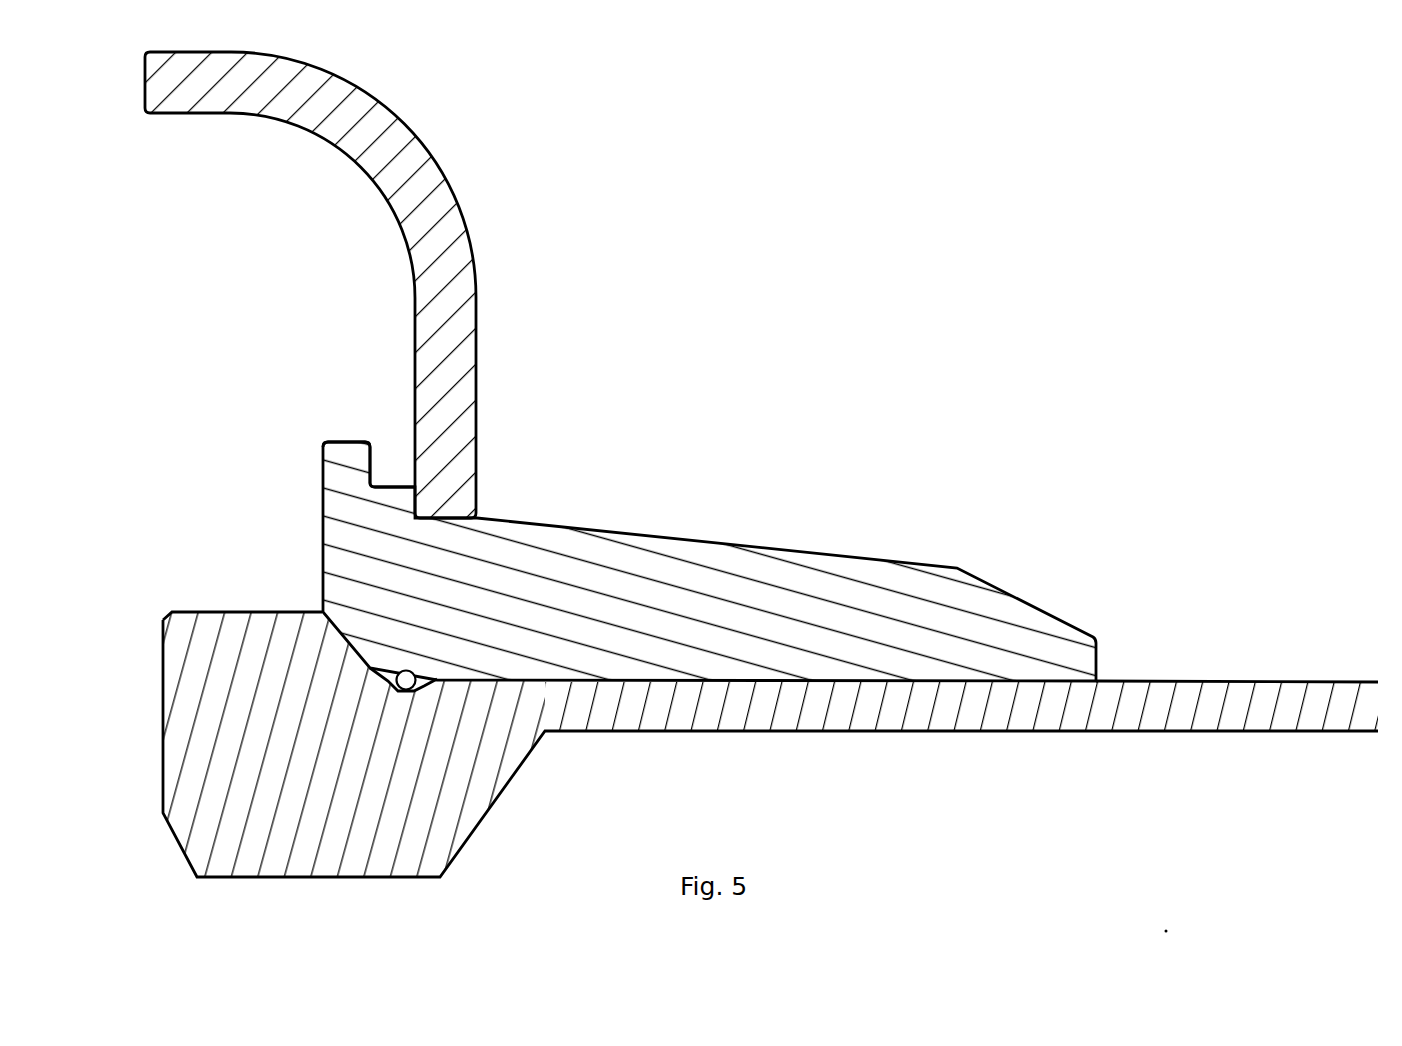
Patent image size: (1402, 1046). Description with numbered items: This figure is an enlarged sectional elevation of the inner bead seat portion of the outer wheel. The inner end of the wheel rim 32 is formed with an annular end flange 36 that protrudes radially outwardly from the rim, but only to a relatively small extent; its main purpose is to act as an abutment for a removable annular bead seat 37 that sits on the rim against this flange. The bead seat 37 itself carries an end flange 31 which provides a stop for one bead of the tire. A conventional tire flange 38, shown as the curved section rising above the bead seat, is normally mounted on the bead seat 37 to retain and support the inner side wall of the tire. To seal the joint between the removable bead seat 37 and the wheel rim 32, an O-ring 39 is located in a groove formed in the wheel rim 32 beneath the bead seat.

The end flange 31 is at (393, 485).
The wheel rim 32 is at (1300, 682).
The annular end flange 36 is at (147, 667).
The removable annular bead seat 37 is at (670, 524).
The tire flange 38 is at (490, 229).
The O-ring 39 is at (397, 661).